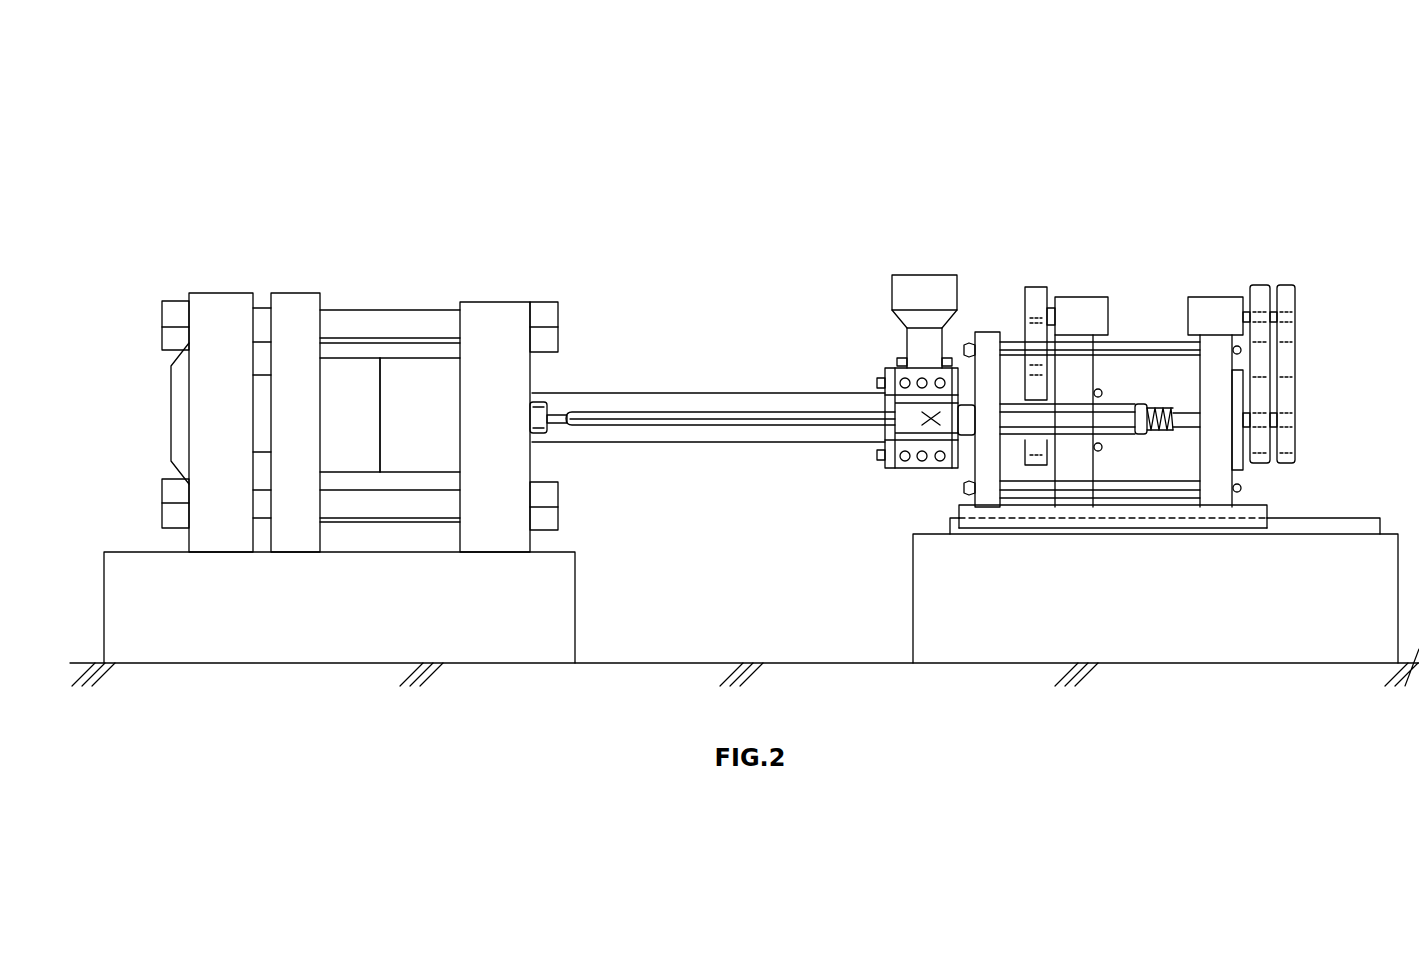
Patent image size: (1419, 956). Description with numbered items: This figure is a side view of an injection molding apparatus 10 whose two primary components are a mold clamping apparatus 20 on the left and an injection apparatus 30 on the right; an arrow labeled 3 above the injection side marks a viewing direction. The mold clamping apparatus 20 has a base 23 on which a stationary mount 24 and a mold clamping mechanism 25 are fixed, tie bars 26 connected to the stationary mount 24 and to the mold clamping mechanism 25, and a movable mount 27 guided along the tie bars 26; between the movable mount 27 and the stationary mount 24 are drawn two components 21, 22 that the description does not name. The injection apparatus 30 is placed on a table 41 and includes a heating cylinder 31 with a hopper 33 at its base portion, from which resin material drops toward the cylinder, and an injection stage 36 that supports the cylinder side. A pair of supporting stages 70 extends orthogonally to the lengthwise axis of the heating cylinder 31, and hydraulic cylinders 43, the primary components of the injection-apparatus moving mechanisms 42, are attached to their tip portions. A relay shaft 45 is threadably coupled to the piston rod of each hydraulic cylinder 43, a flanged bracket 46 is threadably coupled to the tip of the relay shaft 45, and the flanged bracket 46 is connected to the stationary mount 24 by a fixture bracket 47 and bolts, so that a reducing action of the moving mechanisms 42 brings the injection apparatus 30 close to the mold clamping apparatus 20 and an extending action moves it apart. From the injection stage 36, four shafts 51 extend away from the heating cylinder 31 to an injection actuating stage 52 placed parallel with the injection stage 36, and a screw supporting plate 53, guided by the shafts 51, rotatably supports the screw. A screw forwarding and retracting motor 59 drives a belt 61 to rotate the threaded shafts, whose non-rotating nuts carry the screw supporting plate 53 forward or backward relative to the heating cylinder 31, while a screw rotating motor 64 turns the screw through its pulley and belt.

The injection molding apparatus 10 is at (1404, 84).
The viewing direction indicator 3 is at (1088, 232).
The mold clamping apparatus 20 is at (500, 204).
The movable mold 21 is at (425, 378).
The stationary mold 22 is at (350, 378).
The base 23 is at (335, 632).
The stationary mount 24 is at (497, 310).
The mold clamping mechanism 25 is at (215, 300).
The tie bars 26 is at (390, 327).
The movable mount 27 is at (303, 300).
The injection apparatus 30 is at (1290, 208).
The heating cylinder 31 is at (662, 405).
The hopper 33 is at (920, 295).
The injection stage 36 is at (985, 340).
The table 41 is at (1158, 632).
The injection-apparatus moving mechanisms 42 is at (790, 443).
The hydraulic cylinders 43 is at (1020, 422).
The relay shaft 45 is at (688, 428).
The flanged bracket 46 is at (547, 425).
The fixture bracket 47 is at (537, 396).
The shafts 51 is at (1142, 352).
The injection actuating stage 52 is at (1212, 455).
The screw supporting plate 53 is at (1080, 370).
The screw forwarding and retracting motor 59 is at (1215, 310).
The belt 61 is at (1262, 370).
The screw rotating motor 64 is at (1080, 310).
The supporting stages 70 is at (912, 470).